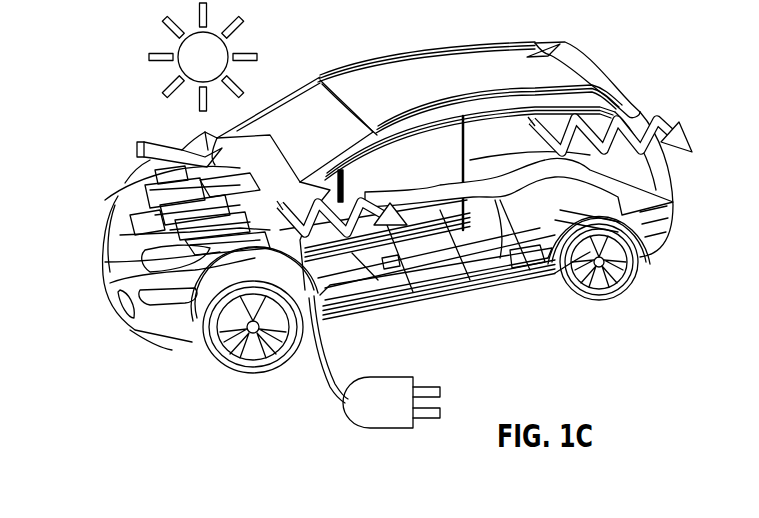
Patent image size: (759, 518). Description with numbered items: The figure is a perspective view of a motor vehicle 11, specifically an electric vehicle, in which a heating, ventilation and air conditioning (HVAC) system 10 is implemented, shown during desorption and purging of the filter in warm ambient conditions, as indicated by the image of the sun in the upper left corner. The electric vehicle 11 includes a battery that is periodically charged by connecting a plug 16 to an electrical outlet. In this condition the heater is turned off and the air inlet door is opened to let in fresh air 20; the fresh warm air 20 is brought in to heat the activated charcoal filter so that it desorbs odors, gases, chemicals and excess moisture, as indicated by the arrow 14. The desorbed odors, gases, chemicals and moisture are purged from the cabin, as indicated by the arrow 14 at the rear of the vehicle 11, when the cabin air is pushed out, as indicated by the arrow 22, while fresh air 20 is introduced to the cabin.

The heating, ventilation and air conditioning (HVAC) system 10 is at (276, 70).
The motor vehicle 11 is at (563, 45).
The arrow 14 is at (668, 127).
The plug 16 is at (300, 372).
The fresh air 20 is at (148, 144).
The arrow 22 is at (553, 280).